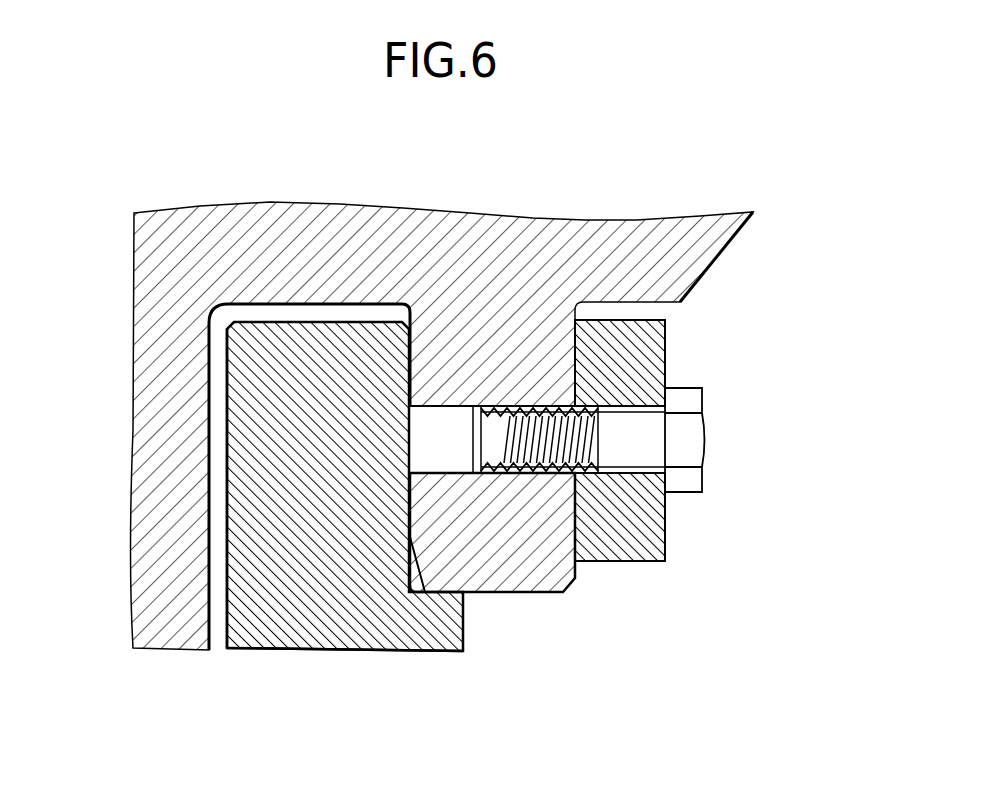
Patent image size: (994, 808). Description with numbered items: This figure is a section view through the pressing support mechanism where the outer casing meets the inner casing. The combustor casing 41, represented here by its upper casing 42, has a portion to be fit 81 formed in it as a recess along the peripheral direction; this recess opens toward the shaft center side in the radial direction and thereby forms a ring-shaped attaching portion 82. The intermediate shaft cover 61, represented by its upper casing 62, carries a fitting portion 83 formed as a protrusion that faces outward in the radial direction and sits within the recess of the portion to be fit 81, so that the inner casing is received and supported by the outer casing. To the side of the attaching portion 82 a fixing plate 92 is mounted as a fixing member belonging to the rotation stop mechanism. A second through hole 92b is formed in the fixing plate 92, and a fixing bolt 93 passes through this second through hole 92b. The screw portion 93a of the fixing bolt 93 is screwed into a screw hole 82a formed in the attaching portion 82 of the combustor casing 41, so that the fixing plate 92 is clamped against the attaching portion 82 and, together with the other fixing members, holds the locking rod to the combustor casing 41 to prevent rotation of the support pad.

The combustor casing 41 is at (738, 243).
The upper casing 42 is at (647, 240).
The intermediate shaft cover 61 is at (212, 562).
The upper casing 62 is at (337, 630).
The portion to be fit 81 is at (292, 306).
The attaching portion 82 is at (563, 578).
The screw hole 82a is at (522, 457).
The fitting portion 83 is at (357, 345).
The fixing plate 92 is at (670, 542).
The second through hole 92b is at (613, 460).
The fixing bolt 93 is at (704, 402).
The screw portion 93a is at (536, 418).